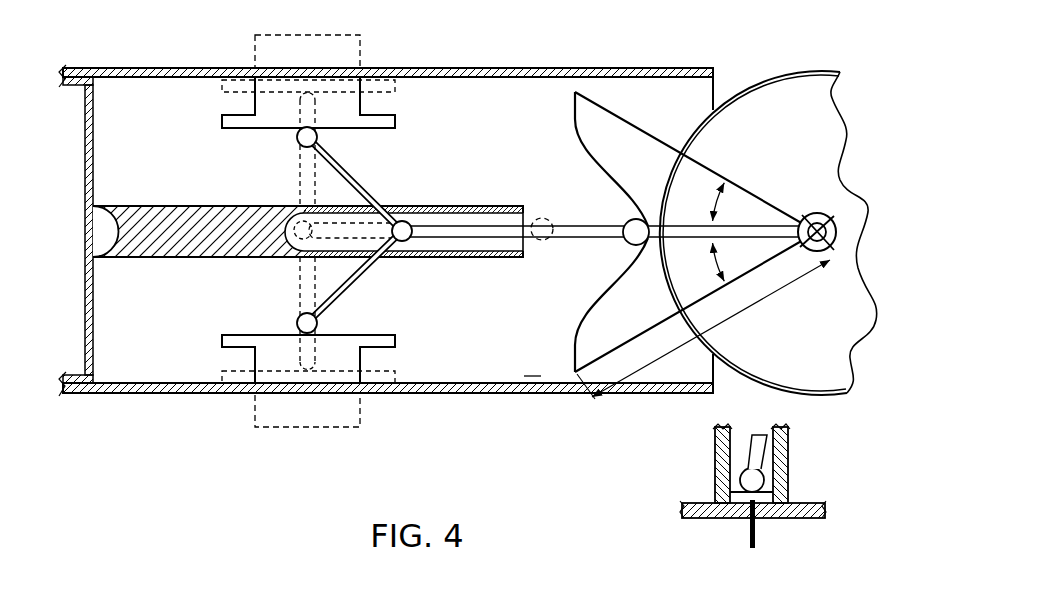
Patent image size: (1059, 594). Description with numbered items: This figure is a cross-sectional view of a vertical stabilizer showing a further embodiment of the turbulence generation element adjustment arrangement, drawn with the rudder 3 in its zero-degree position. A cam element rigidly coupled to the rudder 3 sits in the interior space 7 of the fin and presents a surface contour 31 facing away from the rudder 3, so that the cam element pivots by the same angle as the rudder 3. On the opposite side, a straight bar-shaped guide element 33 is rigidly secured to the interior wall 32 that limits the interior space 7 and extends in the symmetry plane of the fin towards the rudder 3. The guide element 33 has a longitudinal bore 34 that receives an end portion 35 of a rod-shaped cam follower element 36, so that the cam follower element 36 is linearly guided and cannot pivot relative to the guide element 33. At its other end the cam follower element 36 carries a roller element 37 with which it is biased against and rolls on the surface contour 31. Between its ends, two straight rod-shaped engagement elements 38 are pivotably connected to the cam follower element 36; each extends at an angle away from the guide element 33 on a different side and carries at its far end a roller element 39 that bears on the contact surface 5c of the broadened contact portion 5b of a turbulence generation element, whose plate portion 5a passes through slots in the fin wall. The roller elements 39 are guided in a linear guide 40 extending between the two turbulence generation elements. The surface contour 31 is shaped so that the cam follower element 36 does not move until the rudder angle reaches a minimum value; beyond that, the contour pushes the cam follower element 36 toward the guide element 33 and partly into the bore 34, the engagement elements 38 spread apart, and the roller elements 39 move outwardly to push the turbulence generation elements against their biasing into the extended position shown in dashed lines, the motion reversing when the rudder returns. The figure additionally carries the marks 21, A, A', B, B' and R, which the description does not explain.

The rudder 3 is at (812, 80).
The wheel axle 21 is at (816, 213).
The surface contour 31 is at (575, 129).
The interior wall 32 is at (95, 299).
The guide element 33 is at (184, 216).
The longitudinal bore 34 is at (402, 221).
The end portion 35 is at (412, 228).
The cam follower element 36 is at (459, 255).
The roller element 37 is at (623, 222).
The engagement element 38 is at (352, 183).
The roller element 39 is at (298, 136).
The linear guide 40 is at (300, 278).
The plate portion 5a is at (256, 51).
The contact portion 5b is at (223, 120).
The contact surface 5c is at (270, 92).
The interior space 7 is at (532, 361).
The position A is at (284, 197).
The position A' is at (396, 272).
The position B is at (541, 259).
The position B' is at (606, 258).
The radius R is at (720, 325).